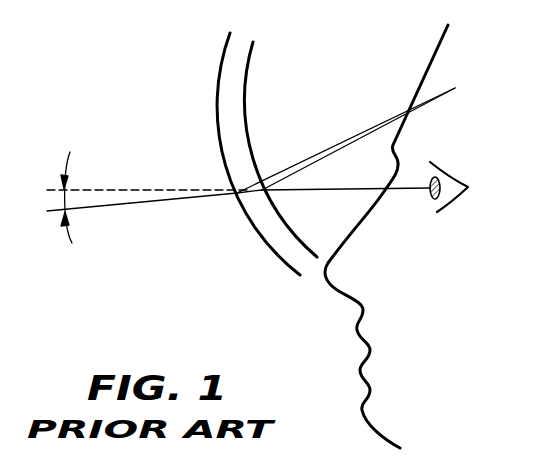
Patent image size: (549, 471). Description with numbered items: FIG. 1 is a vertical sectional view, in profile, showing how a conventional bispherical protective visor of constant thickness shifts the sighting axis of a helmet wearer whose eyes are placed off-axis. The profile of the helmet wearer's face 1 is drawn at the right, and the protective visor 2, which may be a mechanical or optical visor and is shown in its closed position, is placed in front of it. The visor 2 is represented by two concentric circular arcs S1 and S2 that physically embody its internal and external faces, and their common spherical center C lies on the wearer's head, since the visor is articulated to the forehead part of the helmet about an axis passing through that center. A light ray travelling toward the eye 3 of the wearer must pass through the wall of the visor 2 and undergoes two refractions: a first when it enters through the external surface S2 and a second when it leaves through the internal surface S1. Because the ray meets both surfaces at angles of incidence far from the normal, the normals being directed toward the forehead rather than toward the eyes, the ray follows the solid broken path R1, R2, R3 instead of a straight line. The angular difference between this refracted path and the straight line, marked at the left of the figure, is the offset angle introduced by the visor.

The face 1 is at (442, 57).
The protective visor 2 is at (239, 150).
The eye 3 is at (448, 176).
The internal face S1 is at (248, 70).
The external face S2 is at (217, 72).
The first segment of light ray R1 is at (142, 205).
The second segment of light ray R2 is at (250, 195).
The third segment of light ray R3 is at (347, 190).
The common spherical center C is at (354, 133).